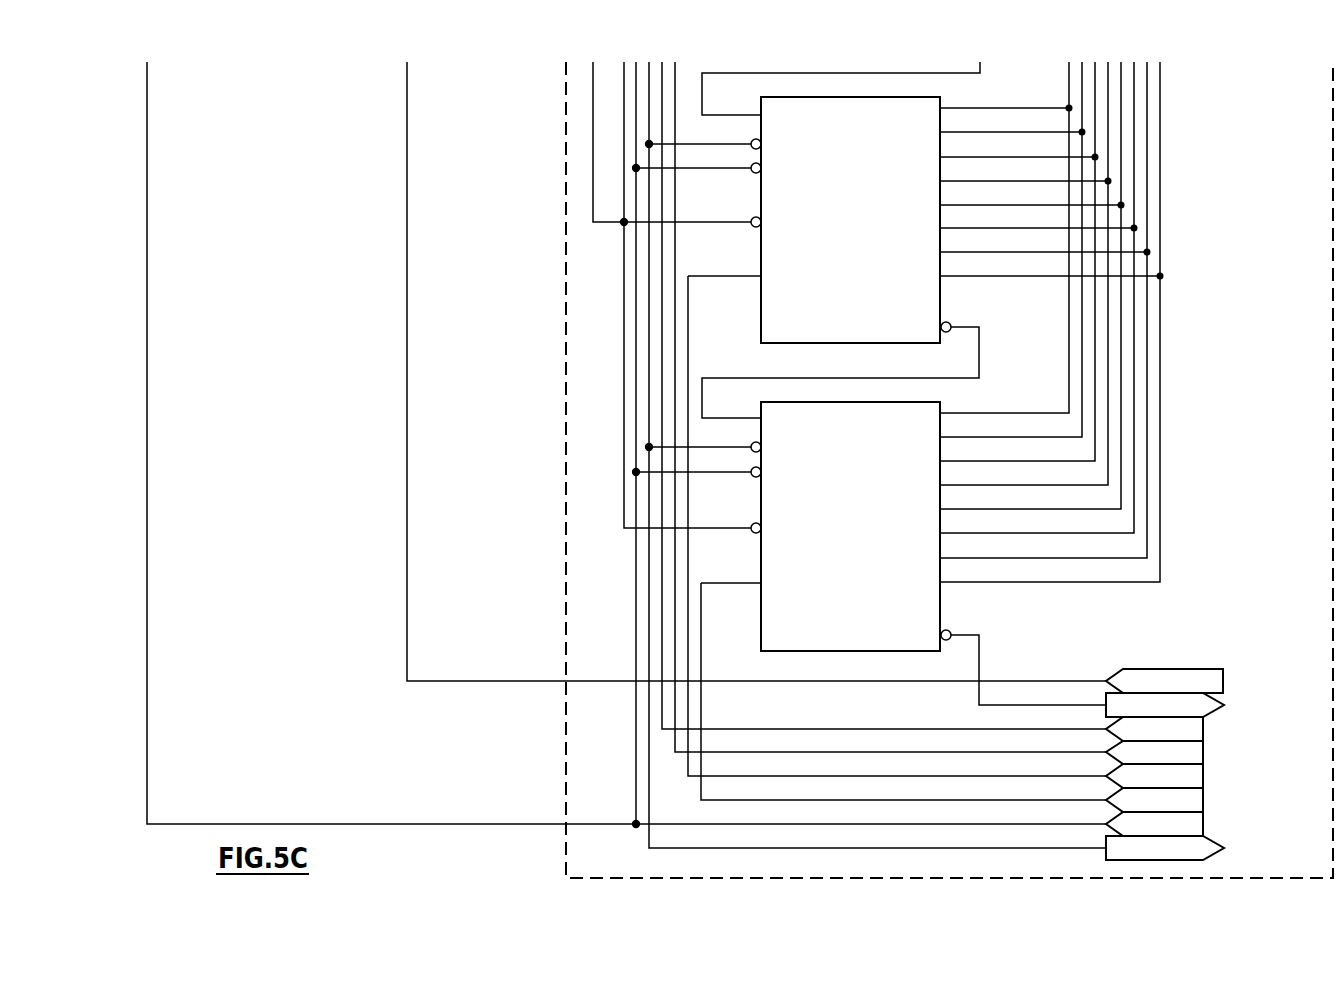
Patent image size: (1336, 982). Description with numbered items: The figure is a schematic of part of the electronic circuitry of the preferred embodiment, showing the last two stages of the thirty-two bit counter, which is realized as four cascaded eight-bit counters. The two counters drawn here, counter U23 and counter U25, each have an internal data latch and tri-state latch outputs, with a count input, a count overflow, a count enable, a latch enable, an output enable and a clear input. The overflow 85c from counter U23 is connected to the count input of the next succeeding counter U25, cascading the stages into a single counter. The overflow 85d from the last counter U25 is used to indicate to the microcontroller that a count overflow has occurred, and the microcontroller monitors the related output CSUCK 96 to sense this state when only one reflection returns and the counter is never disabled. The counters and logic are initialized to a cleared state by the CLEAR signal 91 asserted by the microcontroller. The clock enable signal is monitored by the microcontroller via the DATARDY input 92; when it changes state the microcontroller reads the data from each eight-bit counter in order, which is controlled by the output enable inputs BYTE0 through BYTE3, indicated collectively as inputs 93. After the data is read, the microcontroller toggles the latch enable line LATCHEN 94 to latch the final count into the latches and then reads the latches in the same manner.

The 8-bit counter U23 is at (937, 96).
The 8-bit counter U25 is at (937, 402).
The overflow 85c is at (979, 358).
The overflow 85d is at (979, 665).
The CLEAR signal 91 is at (487, 826).
The DATARDY input 92 is at (788, 850).
The output enable inputs (BYTE0–BYTE3) 93 is at (1222, 776).
The latch enable line LATCHEN 94 is at (1162, 671).
The output CSUCK 96 is at (1213, 712).